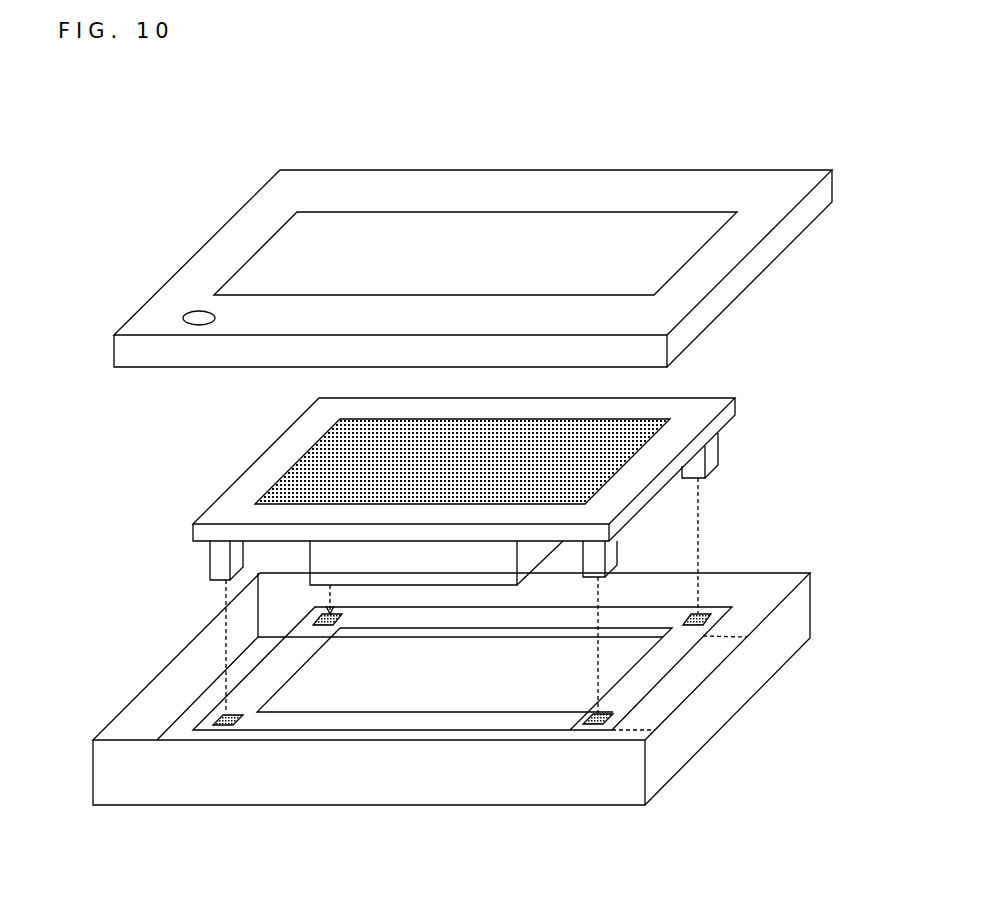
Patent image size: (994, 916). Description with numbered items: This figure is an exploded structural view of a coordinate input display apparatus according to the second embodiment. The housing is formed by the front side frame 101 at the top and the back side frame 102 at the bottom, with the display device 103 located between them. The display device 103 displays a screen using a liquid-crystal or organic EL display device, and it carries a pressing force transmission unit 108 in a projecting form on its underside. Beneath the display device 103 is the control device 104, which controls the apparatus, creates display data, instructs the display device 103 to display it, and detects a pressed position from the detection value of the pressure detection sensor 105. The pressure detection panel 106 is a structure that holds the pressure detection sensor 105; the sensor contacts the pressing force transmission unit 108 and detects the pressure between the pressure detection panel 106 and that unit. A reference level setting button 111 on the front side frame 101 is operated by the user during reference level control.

The front side frame 101 is at (750, 278).
The back side frame 102 is at (400, 805).
The display device 103 is at (702, 390).
The control device 104 is at (405, 573).
The pressure detection sensor 105 is at (704, 610).
The pressure detection panel 106 is at (397, 712).
The pressing force transmission unit 108 is at (210, 575).
The reference level setting button 111 is at (194, 312).